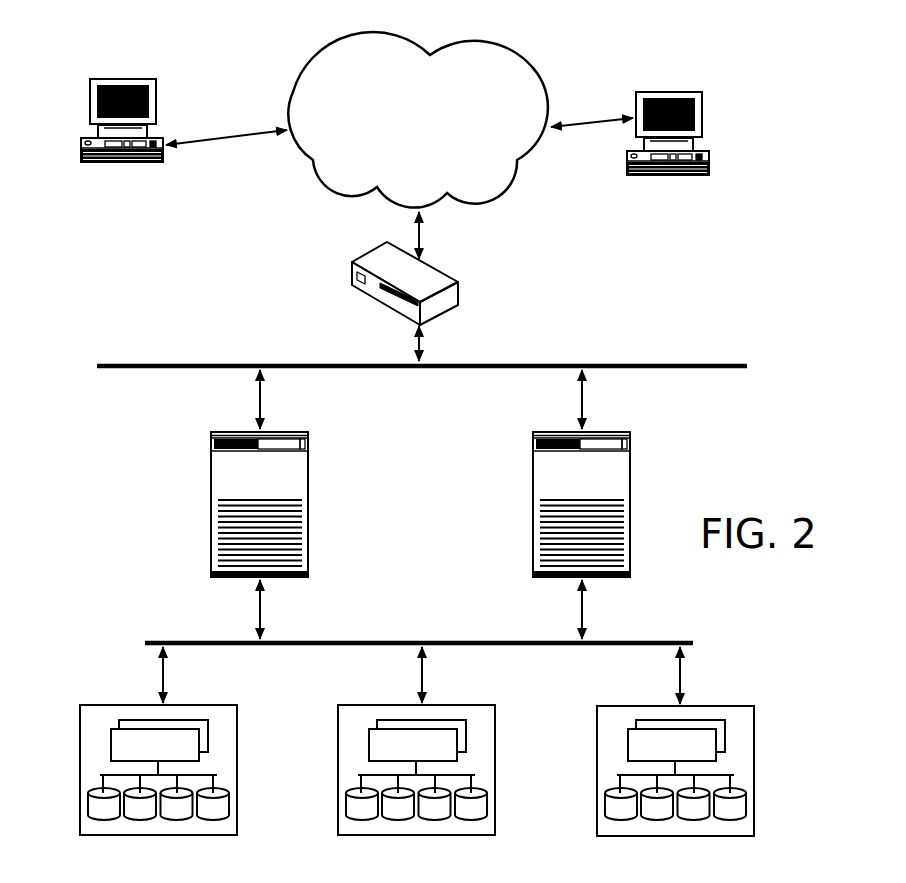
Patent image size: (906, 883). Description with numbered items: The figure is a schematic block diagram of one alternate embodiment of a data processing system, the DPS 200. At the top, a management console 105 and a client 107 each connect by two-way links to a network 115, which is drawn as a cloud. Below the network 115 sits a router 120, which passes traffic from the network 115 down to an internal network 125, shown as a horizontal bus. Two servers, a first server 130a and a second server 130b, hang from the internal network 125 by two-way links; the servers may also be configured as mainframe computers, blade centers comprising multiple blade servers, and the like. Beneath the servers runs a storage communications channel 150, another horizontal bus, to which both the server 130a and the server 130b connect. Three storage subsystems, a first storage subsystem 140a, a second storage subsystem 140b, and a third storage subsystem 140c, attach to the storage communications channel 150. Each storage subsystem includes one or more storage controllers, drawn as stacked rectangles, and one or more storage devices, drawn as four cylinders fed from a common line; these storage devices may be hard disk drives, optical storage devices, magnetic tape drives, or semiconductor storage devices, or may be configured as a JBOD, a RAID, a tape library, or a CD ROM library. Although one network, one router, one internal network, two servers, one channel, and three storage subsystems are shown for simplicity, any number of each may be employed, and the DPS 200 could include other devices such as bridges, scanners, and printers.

The DPS 200 is at (82, 59).
The management console 105 is at (156, 80).
The client 107 is at (702, 92).
The network 115 is at (399, 155).
The router 120 is at (459, 282).
The internal network 125 is at (116, 364).
The server 130a is at (308, 433).
The server 130b is at (632, 433).
The storage communications channel 150 is at (353, 641).
The storage subsystem 140a is at (162, 751).
The storage subsystem 140b is at (421, 751).
The storage subsystem 140c is at (678, 752).